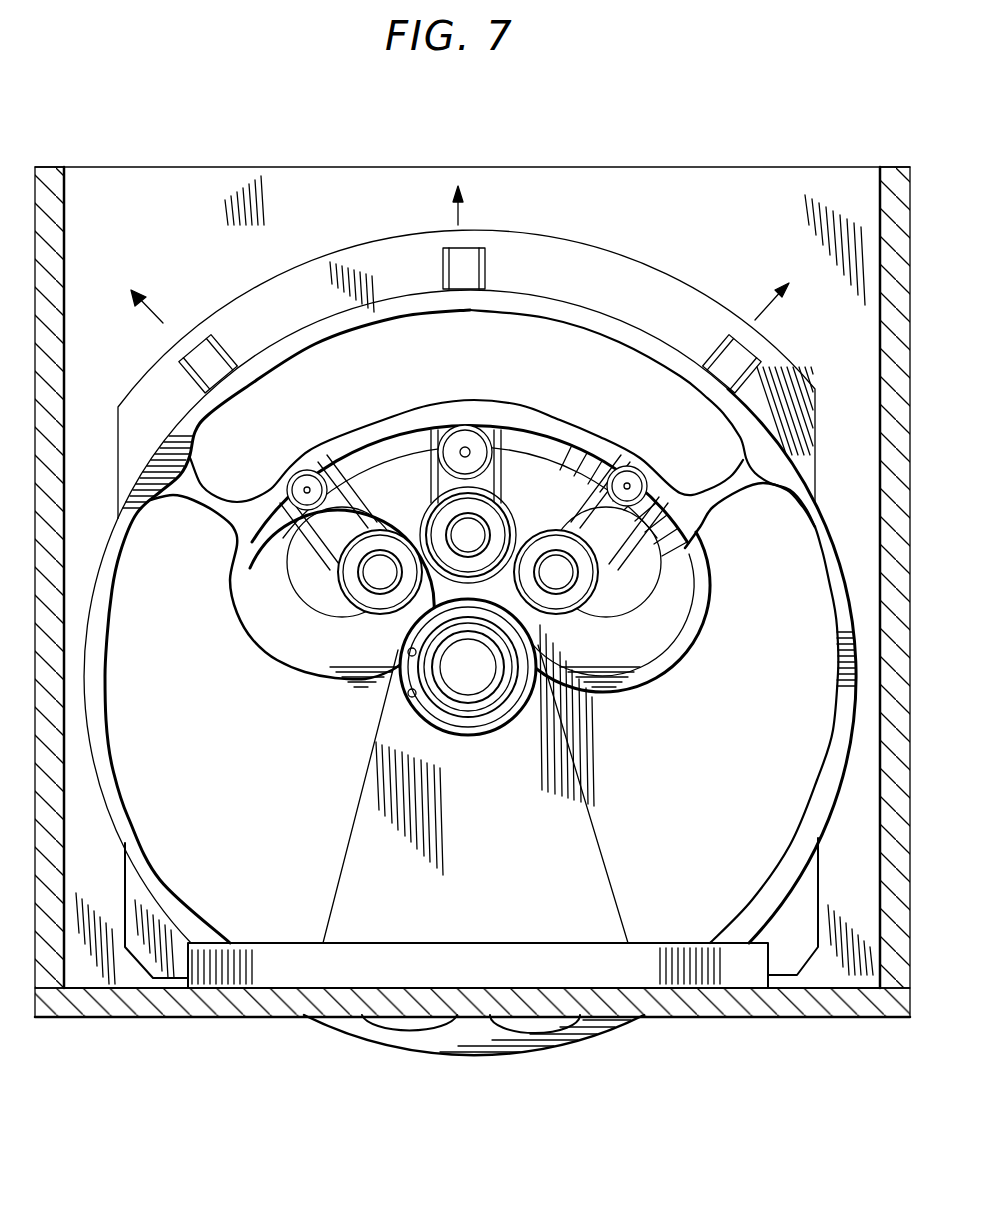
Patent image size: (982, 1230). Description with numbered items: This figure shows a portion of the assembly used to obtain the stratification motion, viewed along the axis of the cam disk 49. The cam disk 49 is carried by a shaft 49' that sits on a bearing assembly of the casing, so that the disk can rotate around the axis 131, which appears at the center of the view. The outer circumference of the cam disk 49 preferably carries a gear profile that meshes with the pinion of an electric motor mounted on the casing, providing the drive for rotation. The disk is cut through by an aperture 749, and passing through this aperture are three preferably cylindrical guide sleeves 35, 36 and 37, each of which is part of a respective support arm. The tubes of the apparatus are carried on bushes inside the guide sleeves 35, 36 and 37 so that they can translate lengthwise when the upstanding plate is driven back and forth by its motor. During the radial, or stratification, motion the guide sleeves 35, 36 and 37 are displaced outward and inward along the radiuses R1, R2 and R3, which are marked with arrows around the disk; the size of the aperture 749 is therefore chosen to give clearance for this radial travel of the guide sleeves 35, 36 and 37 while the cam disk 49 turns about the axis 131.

The cam disk 49 is at (466, 374).
The shaft 49' is at (508, 675).
The aperture 749 is at (270, 615).
The axis 131 is at (468, 672).
The guide sleeve 35 is at (592, 606).
The guide sleeve 36 is at (506, 527).
The guide sleeve 37 is at (352, 612).
The radius R1 is at (770, 302).
The radius R2 is at (462, 210).
The radius R3 is at (156, 316).